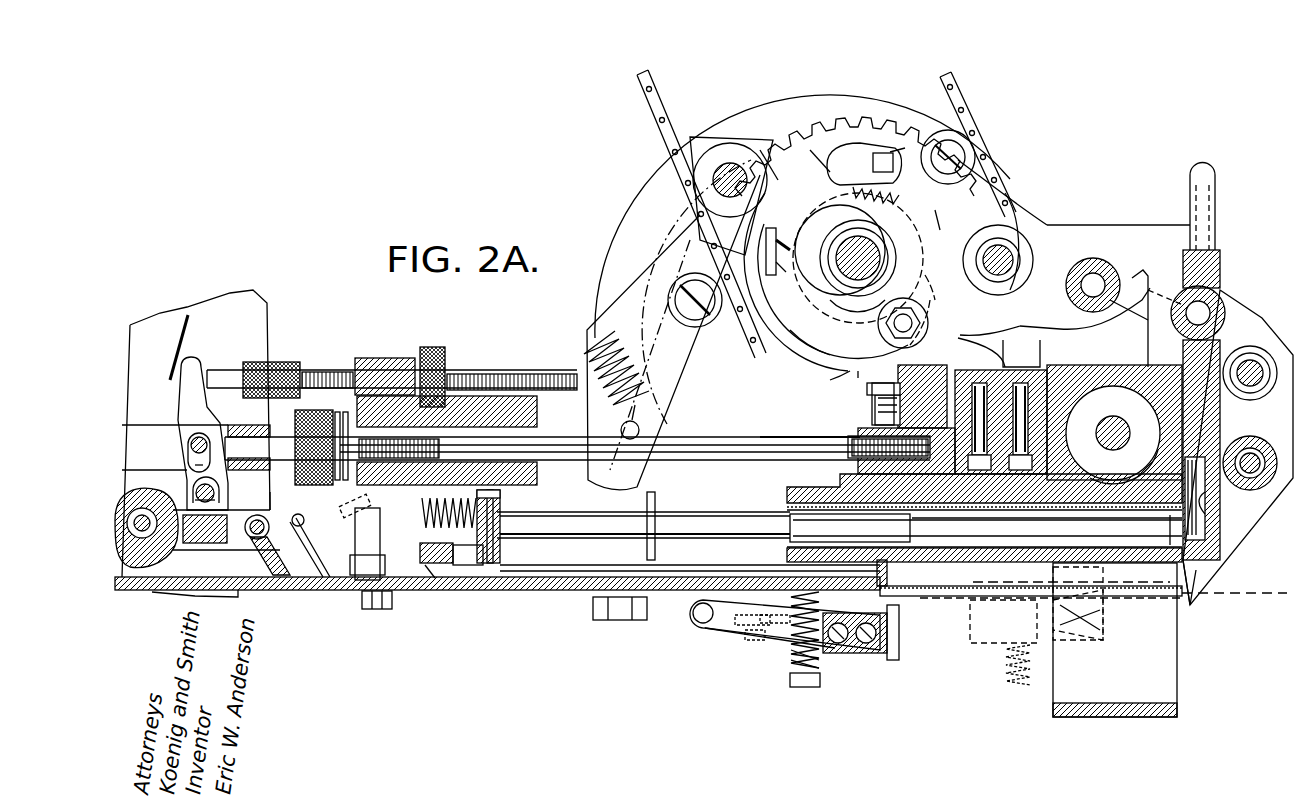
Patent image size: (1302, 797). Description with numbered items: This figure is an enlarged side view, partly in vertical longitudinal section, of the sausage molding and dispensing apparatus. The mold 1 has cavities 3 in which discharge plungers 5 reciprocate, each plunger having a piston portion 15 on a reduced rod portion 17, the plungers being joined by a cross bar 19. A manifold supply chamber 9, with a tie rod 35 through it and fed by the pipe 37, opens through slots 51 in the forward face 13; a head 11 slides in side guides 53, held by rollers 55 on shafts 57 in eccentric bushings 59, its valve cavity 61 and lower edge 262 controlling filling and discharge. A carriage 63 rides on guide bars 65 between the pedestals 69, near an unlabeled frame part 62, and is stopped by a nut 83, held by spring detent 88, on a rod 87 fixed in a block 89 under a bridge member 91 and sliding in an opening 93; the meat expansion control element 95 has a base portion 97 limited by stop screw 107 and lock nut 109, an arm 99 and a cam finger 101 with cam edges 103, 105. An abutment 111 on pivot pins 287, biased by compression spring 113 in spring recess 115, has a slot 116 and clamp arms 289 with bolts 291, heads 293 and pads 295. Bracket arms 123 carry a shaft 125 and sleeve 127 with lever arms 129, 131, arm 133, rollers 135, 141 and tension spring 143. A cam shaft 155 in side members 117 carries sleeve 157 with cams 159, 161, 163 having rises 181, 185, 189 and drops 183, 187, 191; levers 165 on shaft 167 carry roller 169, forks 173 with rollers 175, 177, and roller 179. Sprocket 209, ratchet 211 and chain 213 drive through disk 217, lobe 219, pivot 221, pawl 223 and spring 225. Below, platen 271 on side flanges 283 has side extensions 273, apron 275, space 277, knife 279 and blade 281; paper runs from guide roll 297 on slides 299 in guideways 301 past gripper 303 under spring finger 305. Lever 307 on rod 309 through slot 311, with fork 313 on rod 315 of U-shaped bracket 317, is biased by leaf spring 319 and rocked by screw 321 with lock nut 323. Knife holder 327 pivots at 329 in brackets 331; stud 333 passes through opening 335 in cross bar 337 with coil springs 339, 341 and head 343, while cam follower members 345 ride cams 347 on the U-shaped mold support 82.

The mold 1 is at (776, 494).
The cavities 3 is at (1110, 528).
The discharge plunger 5 is at (718, 500).
The manifold supply chamber 9 is at (1114, 414).
The head 11 is at (1222, 268).
The forward face 13 is at (1175, 522).
The piston portion 15 is at (890, 522).
The rod portion 17 is at (682, 535).
The cross bar 19 is at (657, 496).
The rod 35 is at (1104, 446).
The pipe 37 is at (1262, 370).
The slots 51 is at (1150, 458).
The side guides 53 is at (1240, 510).
The rollers 55 is at (1250, 436).
The shaft 57 is at (1262, 452).
The bushings 59 is at (1262, 352).
The valve cavity 61 is at (1210, 502).
The block 62 is at (240, 425).
The carriage 63 is at (365, 358).
The guide bars 65 is at (722, 437).
The pedestals 69 is at (267, 318).
The U-shaped mold support 82 is at (1105, 703).
The nut 83 is at (318, 412).
The rod 87 is at (762, 437).
The spring detent 88 is at (338, 482).
The block 89 is at (848, 440).
The bridge member 91 is at (893, 385).
The opening 93 is at (256, 436).
The meat expansion control element 95 is at (1030, 327).
The base portion 97 is at (980, 372).
The arm 99 is at (1090, 355).
The cam finger 101 is at (1150, 278).
The cam edge 103 is at (1112, 300).
The cam edge 105 is at (1140, 268).
The stop screw 107 is at (920, 367).
The lock nut 109 is at (872, 386).
The abutment 111 is at (500, 494).
The compression spring 113 is at (415, 458).
The spring recess 115 is at (445, 530).
The slot 116 is at (500, 522).
The side members 117 is at (1125, 225).
The bracket arms 123 is at (714, 137).
The shaft 125 is at (740, 150).
The sleeve 127 is at (765, 150).
The lever arm 129 is at (690, 380).
The lever arm 131 is at (598, 266).
The arm 133 is at (775, 205).
The cam follower roller 135 is at (822, 225).
The cam follower roller 141 is at (688, 327).
The tension spring 143 is at (615, 335).
The cam shaft 155 is at (858, 258).
The sleeve 157 is at (850, 297).
The carriage-advancing cam 159 is at (845, 370).
The carriage-retracting cam 161 is at (778, 272).
The cams 163 is at (1000, 205).
The slide valve operating levers 165 is at (1032, 252).
The shaft 167 is at (1014, 270).
The roller 169 is at (1226, 311).
The fork 173 is at (1010, 190).
The cam follower roller 175 is at (975, 150).
The cam follower roller 177 is at (928, 323).
The roller 179 is at (1108, 262).
The rise 181 is at (858, 375).
The drop 183 is at (925, 305).
The rise 185 is at (898, 196).
The drop 187 is at (766, 255).
The rise 189 is at (928, 282).
The drop 191 is at (938, 215).
The sprocket 209 is at (896, 118).
The ratchet 211 is at (872, 165).
The endless chain 213 is at (660, 154).
The disk 217 is at (800, 325).
The lobe 219 is at (848, 160).
The pivot 221 is at (826, 165).
The pawl 223 is at (898, 158).
The compression spring 225 is at (776, 268).
The lower edge 262 is at (1191, 603).
The platen 271 is at (580, 591).
The side extensions 273 is at (950, 598).
The apron 275 is at (1268, 590).
The space 277 is at (950, 586).
The knife 279 is at (1110, 580).
The blade 281 is at (890, 568).
The side flanges 283 is at (490, 578).
The pivot pins 287 is at (455, 578).
The clamp arms 289 is at (445, 592).
The bolts 291 is at (356, 515).
The heads 293 is at (355, 558).
The paper-gripping pads 295 is at (362, 600).
The guide roll 297 is at (150, 486).
The slides 299 is at (245, 540).
The guideways 301 is at (272, 500).
The paper stop 303 is at (272, 590).
The spring finger 305 is at (432, 578).
The lever 307 is at (182, 392).
The rod 309 is at (188, 445).
The slot 311 is at (192, 462).
The fork 313 is at (218, 488).
The rod 315 is at (218, 500).
The U-shaped bracket 317 is at (195, 543).
The leaf spring 319 is at (178, 343).
The paper length control screw 321 is at (470, 372).
The lock nut 323 is at (432, 347).
The knife holder 327 is at (735, 640).
The pivot 329 is at (700, 625).
The brackets 331 is at (640, 620).
The stud 333 is at (822, 672).
The opening 335 is at (755, 640).
The cross bar 337 is at (775, 622).
The coil spring 339 is at (800, 618).
The coil spring 341 is at (792, 668).
The head 343 is at (798, 688).
The cam follower members 345 is at (822, 622).
The cams 347 is at (1080, 635).